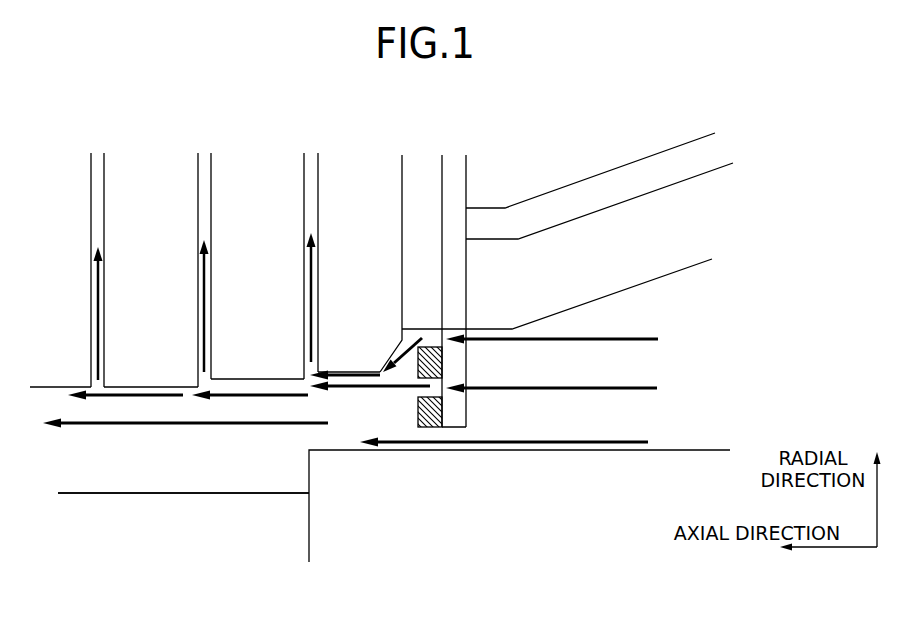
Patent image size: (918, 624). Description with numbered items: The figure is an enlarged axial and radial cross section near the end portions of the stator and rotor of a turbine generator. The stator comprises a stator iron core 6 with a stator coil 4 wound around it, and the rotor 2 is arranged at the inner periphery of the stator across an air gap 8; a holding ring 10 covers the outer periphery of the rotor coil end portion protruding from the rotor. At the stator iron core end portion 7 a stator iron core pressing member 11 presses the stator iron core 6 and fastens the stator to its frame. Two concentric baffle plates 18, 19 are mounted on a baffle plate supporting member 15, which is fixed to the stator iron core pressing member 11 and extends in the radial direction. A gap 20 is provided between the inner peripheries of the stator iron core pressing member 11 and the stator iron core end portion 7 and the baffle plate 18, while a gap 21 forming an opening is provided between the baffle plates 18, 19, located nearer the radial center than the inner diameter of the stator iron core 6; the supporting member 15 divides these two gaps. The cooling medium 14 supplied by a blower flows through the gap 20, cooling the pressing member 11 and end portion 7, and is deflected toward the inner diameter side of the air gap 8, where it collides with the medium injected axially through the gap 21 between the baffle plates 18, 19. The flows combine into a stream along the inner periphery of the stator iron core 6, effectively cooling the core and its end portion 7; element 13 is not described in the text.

The rotor 2 is at (124, 522).
The stator coil 4 is at (692, 232).
The stator iron core 6 is at (153, 168).
The stator iron core end portion 7 is at (362, 168).
The air gap 8 is at (247, 482).
The holding ring 10 is at (683, 450).
The stator iron core pressing member 11 is at (421, 168).
The seal fin 13 is at (313, 168).
The cooling medium 14 is at (640, 338).
The baffle plate supporting member 15 is at (459, 168).
The baffle plate 18 is at (442, 360).
The baffle plate 19 is at (442, 412).
The gap 20 is at (413, 334).
The gap 21 is at (417, 393).